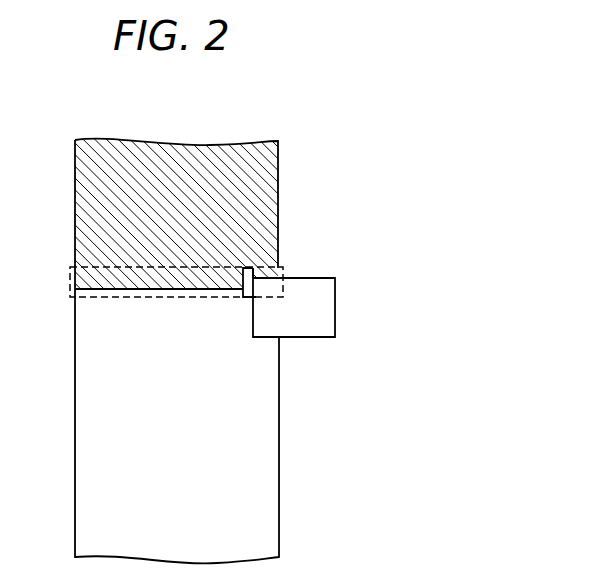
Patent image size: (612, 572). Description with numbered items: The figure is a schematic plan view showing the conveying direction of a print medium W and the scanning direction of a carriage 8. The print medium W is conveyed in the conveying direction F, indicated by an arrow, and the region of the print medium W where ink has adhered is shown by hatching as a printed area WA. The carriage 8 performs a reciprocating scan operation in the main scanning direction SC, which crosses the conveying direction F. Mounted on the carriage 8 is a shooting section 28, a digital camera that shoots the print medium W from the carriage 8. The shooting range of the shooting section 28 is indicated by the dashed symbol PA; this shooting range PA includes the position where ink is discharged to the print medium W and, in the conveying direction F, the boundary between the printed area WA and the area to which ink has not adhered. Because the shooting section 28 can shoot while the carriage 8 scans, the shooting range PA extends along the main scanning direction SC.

The print medium W is at (281, 444).
The printed area WA is at (82, 226).
The shooting range PA is at (87, 302).
The shooting section 28 is at (248, 298).
The carriage 8 is at (318, 337).
The main scanning direction SC is at (230, 323).
The conveying direction F is at (300, 163).